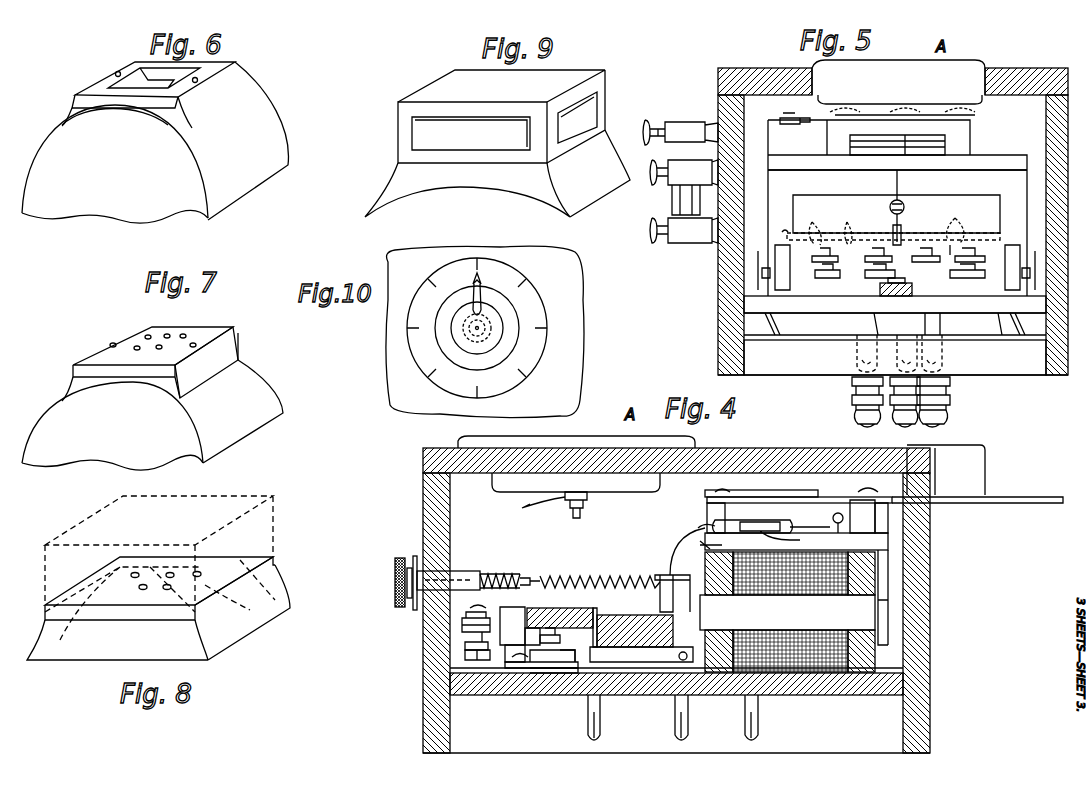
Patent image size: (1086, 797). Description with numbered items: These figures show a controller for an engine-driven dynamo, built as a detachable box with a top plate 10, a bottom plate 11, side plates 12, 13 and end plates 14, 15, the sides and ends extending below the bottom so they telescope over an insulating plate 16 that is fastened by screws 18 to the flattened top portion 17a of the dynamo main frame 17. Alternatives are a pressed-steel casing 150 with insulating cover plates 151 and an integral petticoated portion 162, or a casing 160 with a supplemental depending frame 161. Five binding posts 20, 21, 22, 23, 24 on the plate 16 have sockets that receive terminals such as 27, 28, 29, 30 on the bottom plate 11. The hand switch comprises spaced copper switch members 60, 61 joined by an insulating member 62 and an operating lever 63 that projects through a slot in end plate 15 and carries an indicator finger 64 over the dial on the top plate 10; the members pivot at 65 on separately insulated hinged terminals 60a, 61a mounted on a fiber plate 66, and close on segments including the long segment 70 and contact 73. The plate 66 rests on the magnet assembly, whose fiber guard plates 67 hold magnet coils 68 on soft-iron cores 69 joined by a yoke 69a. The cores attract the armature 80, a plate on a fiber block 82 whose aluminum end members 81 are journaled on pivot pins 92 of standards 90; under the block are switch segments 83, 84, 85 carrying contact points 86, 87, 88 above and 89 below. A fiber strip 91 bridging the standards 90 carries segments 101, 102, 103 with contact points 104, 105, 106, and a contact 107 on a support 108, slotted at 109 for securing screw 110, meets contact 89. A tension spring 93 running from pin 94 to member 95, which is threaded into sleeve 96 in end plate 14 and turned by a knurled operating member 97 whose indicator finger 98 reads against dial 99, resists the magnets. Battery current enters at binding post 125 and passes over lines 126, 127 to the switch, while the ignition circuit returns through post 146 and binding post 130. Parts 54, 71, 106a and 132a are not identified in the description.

In FIG. 5, the top plate 10 is at (745, 70).
In FIG. 4, the top plate 10 is at (760, 458).
In FIG. 5, the bottom plate 11 is at (895, 315).
In FIG. 4, the bottom plate 11 is at (835, 684).
In FIG. 5, the side plate 12 is at (1046, 130).
In FIG. 5, the side plate 13 is at (718, 302).
In FIG. 10, the end plate 14 is at (485, 331).
In FIG. 4, the end plate 14 is at (428, 706).
In FIG. 4, the end plate 15 is at (930, 708).
In FIG. 7, the insulating plate 16 is at (205, 332).
In FIG. 8, the insulating plate 16 is at (276, 563).
In FIG. 5, the insulating plate 16 is at (1003, 370).
In FIG. 6, the main frame 17 is at (155, 142).
In FIG. 7, the main frame 17 is at (245, 418).
In FIG. 6, the flattened top portion 17a is at (74, 106).
In FIG. 7, the flattened top portion 17a is at (240, 340).
In FIG. 7, the screws 18 is at (108, 346).
In FIG. 7, the binding post 20 is at (145, 334).
In FIG. 7, the binding post 21 is at (166, 332).
In FIG. 5, the binding post 21 is at (950, 405).
In FIG. 7, the binding post 22 is at (183, 332).
In FIG. 5, the binding post 22 is at (898, 425).
In FIG. 7, the binding post 23 is at (134, 346).
In FIG. 5, the binding post 23 is at (852, 401).
In FIG. 7, the binding post 24 is at (237, 352).
In FIG. 5, the terminal post 27 is at (935, 325).
In FIG. 5, the terminal 28 is at (904, 322).
In FIG. 4, the terminal 28 is at (590, 718).
In FIG. 5, the terminal 29 is at (862, 326).
In FIG. 4, the terminal 29 is at (675, 717).
In FIG. 4, the terminal 30 is at (758, 710).
In FIG. 4, the lever 54 is at (540, 505).
In FIG. 4, the switch member 60 is at (835, 497).
In FIG. 5, the hinged terminal 60a is at (862, 112).
In FIG. 4, the hinged terminal 60a is at (715, 498).
In FIG. 4, the switch member 61 is at (880, 530).
In FIG. 5, the hinged terminal 61a is at (945, 137).
In FIG. 4, the hinged terminal 61a is at (705, 526).
In FIG. 4, the insulating member 62 is at (811, 542).
In FIG. 4, the operating lever 63 is at (1022, 497).
In FIG. 4, the indicator finger 64 is at (946, 470).
In FIG. 5, the pivot 65 is at (898, 82).
In FIG. 4, the pivot 65 is at (718, 487).
In FIG. 5, the fiber base plate 66 is at (993, 158).
In FIG. 4, the fiber base plate 66 is at (886, 550).
In FIG. 5, the fiber guard plate 67 is at (897, 180).
In FIG. 4, the fiber guard plate 67 is at (840, 578).
In FIG. 4, the magnet coil 68 is at (790, 612).
In FIG. 5, the magnet core 69 is at (955, 218).
In FIG. 4, the magnet core 69 is at (787, 612).
In FIG. 4, the yoke 69a is at (880, 610).
In FIG. 5, the long segment 70 is at (766, 116).
In FIG. 4, the long segment 70 is at (785, 494).
In FIG. 4, the post 71 is at (722, 524).
In FIG. 4, the contact 73 is at (765, 521).
In FIG. 4, the armature 80 is at (675, 575).
In FIG. 5, the end member 81 is at (895, 304).
In FIG. 4, the end member 81 is at (633, 662).
In FIG. 4, the fiber block 82 is at (615, 615).
In FIG. 5, the switch segment 83 is at (828, 278).
In FIG. 5, the switch segment 84 is at (877, 259).
In FIG. 4, the switch segment 84 is at (620, 652).
In FIG. 5, the switch segment 85 is at (967, 278).
In FIG. 5, the contact point 86 is at (836, 262).
In FIG. 5, the contact point 87 is at (930, 264).
In FIG. 4, the contact point 87 is at (560, 639).
In FIG. 5, the contact point 88 is at (985, 262).
In FIG. 5, the contact point 89 is at (885, 279).
In FIG. 4, the contact point 89 is at (541, 658).
In FIG. 5, the support standard 90 is at (1012, 245).
In FIG. 5, the fiber strip 91 is at (893, 241).
In FIG. 4, the fiber strip 91 is at (545, 610).
In FIG. 5, the pivot pin 92 is at (897, 268).
In FIG. 4, the pivot pin 92 is at (679, 657).
In FIG. 5, the tension spring 93 is at (893, 200).
In FIG. 4, the tension spring 93 is at (605, 575).
In FIG. 5, the pin 94 is at (892, 222).
In FIG. 4, the pin 94 is at (648, 612).
In FIG. 4, the adjusting member 95 is at (504, 574).
In FIG. 4, the sleeve 96 is at (468, 571).
In FIG. 10, the operating member 97 is at (455, 330).
In FIG. 4, the operating member 97 is at (396, 558).
In FIG. 10, the indicator finger 98 is at (483, 288).
In FIG. 4, the indicator finger 98 is at (410, 568).
In FIG. 10, the dial 99 is at (477, 328).
In FIG. 4, the dial 99 is at (414, 556).
In FIG. 5, the segment 101 is at (822, 221).
In FIG. 5, the segment 102 is at (910, 228).
In FIG. 5, the segment 103 is at (955, 244).
In FIG. 5, the contact point 104 is at (852, 223).
In FIG. 5, the contact point 105 is at (903, 256).
In FIG. 4, the contact point 105 is at (525, 644).
In FIG. 5, the contact point 106 is at (962, 226).
In FIG. 4, the contact 106a is at (495, 604).
In FIG. 5, the contact 107 is at (913, 283).
In FIG. 4, the contact 107 is at (570, 665).
In FIG. 4, the contact support 108 is at (545, 700).
In FIG. 4, the slot 109 is at (512, 668).
In FIG. 4, the securing screw 110 is at (522, 668).
In FIG. 5, the binding post 125 is at (688, 128).
In FIG. 4, the line 126 is at (466, 612).
In FIG. 4, the line 127 is at (672, 545).
In FIG. 5, the binding post 130 is at (700, 246).
In FIG. 4, the plate 132a is at (794, 541).
In FIG. 5, the post 146 is at (680, 192).
In FIG. 9, the metallic controller casing 150 is at (398, 108).
In FIG. 9, the cover plate 151 is at (428, 134).
In FIG. 8, the controller casing 160 is at (112, 500).
In FIG. 8, the supplemental depending frame 161 is at (238, 632).
In FIG. 9, the petticoated portion 162 is at (404, 176).